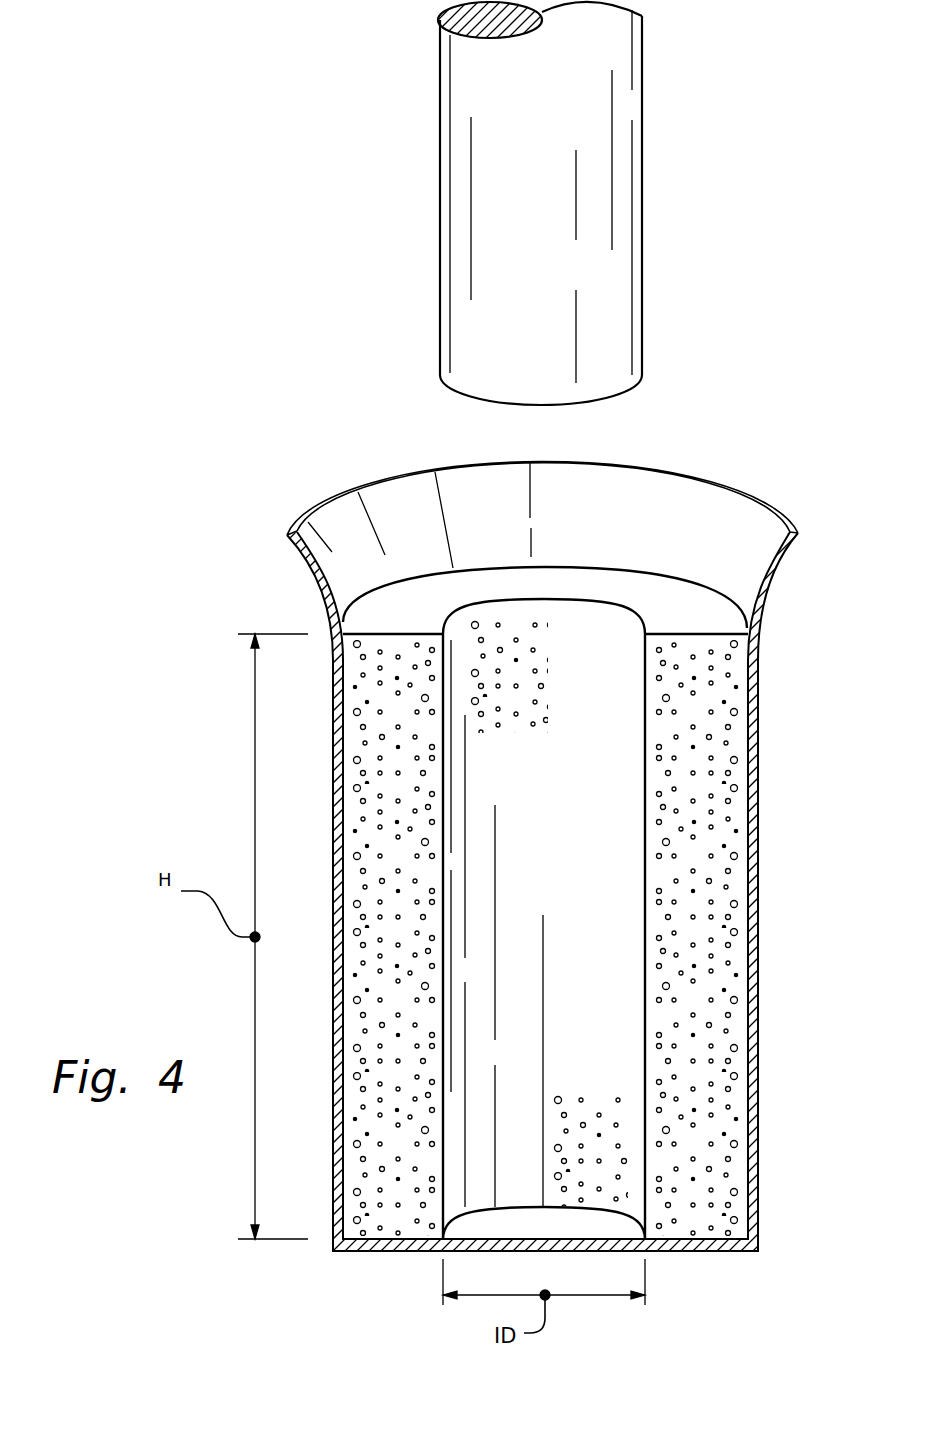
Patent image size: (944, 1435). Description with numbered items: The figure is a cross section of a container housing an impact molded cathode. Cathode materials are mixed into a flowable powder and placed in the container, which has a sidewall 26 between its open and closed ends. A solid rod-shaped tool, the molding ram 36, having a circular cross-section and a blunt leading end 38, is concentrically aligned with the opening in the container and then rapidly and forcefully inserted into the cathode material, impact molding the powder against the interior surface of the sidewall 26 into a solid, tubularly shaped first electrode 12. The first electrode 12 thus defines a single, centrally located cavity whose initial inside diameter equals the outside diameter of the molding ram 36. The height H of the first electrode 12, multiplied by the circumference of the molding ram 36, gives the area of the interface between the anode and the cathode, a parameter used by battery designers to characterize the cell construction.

The molding ram 36 is at (600, 247).
The blunt leading end 38 is at (570, 405).
The sidewall 26 is at (752, 770).
The first electrode 12 is at (723, 1047).